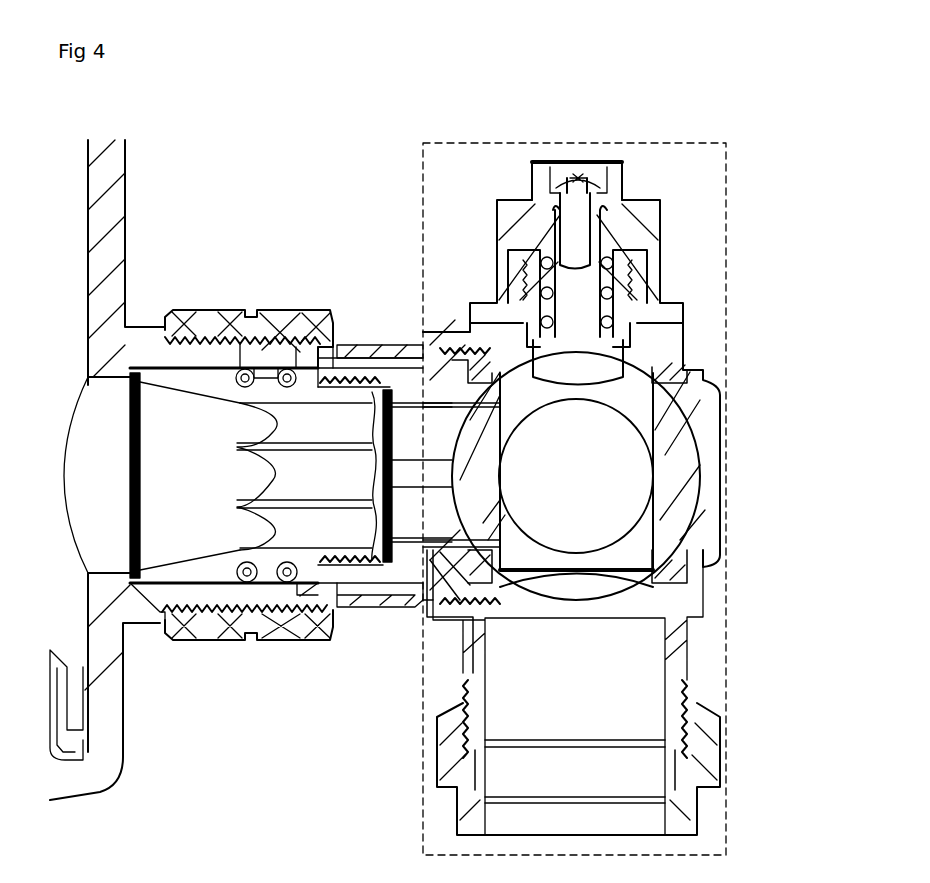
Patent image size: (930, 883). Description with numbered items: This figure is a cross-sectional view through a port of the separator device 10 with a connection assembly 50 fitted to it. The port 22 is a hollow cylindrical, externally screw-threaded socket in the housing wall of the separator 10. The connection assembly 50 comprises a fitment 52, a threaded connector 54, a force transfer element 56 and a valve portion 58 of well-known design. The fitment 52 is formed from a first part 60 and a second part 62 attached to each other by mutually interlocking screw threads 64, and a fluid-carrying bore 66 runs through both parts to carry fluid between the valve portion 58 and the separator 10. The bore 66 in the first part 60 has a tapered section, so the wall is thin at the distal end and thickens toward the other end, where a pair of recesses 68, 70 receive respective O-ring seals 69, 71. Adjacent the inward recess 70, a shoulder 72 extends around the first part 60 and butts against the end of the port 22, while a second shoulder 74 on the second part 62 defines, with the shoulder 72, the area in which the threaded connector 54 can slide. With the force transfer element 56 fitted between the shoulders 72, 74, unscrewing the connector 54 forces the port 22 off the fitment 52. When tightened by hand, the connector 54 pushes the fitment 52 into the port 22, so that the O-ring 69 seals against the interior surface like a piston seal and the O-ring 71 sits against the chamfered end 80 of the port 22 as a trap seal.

The separator device 10 is at (107, 232).
The outlet port 22 is at (191, 598).
The connection assembly 50 is at (624, 450).
The fitment 52 is at (207, 580).
The threaded connector 54 is at (213, 318).
The force transfer element 56 is at (387, 346).
The valve portion 58 is at (740, 478).
The first part 60 is at (340, 384).
The second part 62 is at (413, 582).
The screw threads 64 is at (365, 604).
The fluid-carrying bore 66 is at (155, 505).
The recess 68 is at (258, 366).
The O-ring seal 69 is at (243, 362).
The recess 70 is at (302, 328).
The O-ring seal 71 is at (288, 362).
The shoulder 72 is at (303, 596).
The second shoulder 74 is at (433, 608).
The chamfered end 80 is at (285, 600).